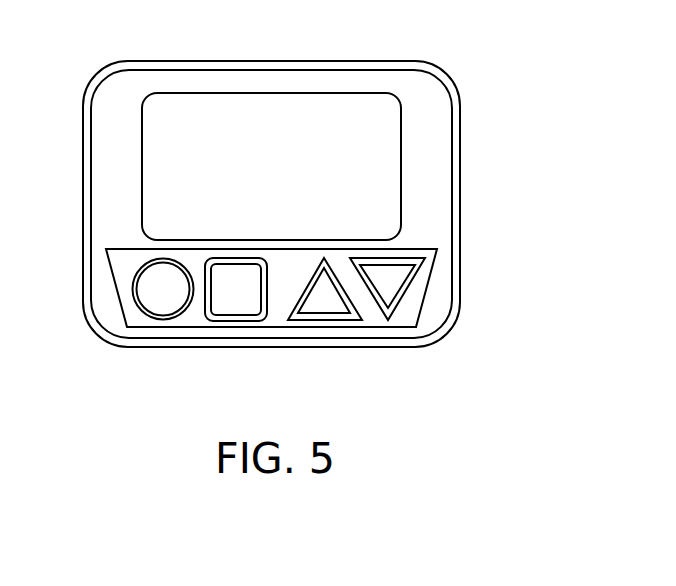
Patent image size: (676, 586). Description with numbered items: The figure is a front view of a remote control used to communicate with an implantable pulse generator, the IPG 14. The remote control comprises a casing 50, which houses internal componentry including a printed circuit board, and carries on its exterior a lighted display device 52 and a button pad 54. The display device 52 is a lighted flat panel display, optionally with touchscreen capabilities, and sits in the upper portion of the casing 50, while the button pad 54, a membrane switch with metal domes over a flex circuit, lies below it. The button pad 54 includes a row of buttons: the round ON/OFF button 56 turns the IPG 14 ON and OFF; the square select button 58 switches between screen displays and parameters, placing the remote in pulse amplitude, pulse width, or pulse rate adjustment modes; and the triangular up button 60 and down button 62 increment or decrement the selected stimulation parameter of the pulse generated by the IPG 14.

The IPG 14 is at (447, 73).
The casing 50 is at (435, 155).
The lighted display device 52 is at (287, 108).
The button pad 54 is at (123, 270).
The ON/OFF button 56 is at (163, 303).
The select button 58 is at (247, 303).
The up button 60 is at (333, 302).
The down button 62 is at (389, 290).